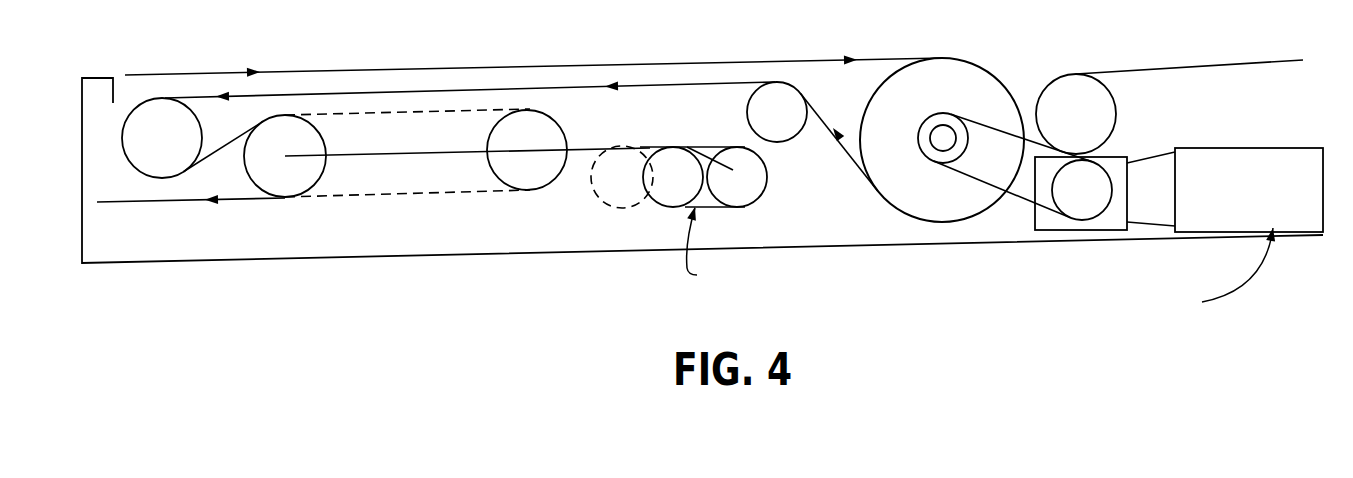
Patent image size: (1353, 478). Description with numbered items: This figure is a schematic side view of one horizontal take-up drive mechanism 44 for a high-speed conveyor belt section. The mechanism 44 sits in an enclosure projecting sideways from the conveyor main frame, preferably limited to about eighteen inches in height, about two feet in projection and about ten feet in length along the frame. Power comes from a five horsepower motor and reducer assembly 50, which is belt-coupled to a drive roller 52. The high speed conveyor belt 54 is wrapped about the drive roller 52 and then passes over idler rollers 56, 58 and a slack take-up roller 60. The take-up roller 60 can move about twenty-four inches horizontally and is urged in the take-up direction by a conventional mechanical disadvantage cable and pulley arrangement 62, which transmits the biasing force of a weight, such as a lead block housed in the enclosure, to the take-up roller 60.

The horizontal take-up drive mechanism 44 is at (613, 292).
The motor and reducer assembly 50 is at (1200, 157).
The drive roller 52 is at (977, 78).
The high speed conveyor belt 54 is at (487, 66).
The idler roller 56 is at (803, 128).
The idler roller 58 is at (147, 167).
The slack take-up roller 60 is at (282, 180).
The mechanical disadvantage cable and pulley arrangement 62 is at (647, 142).